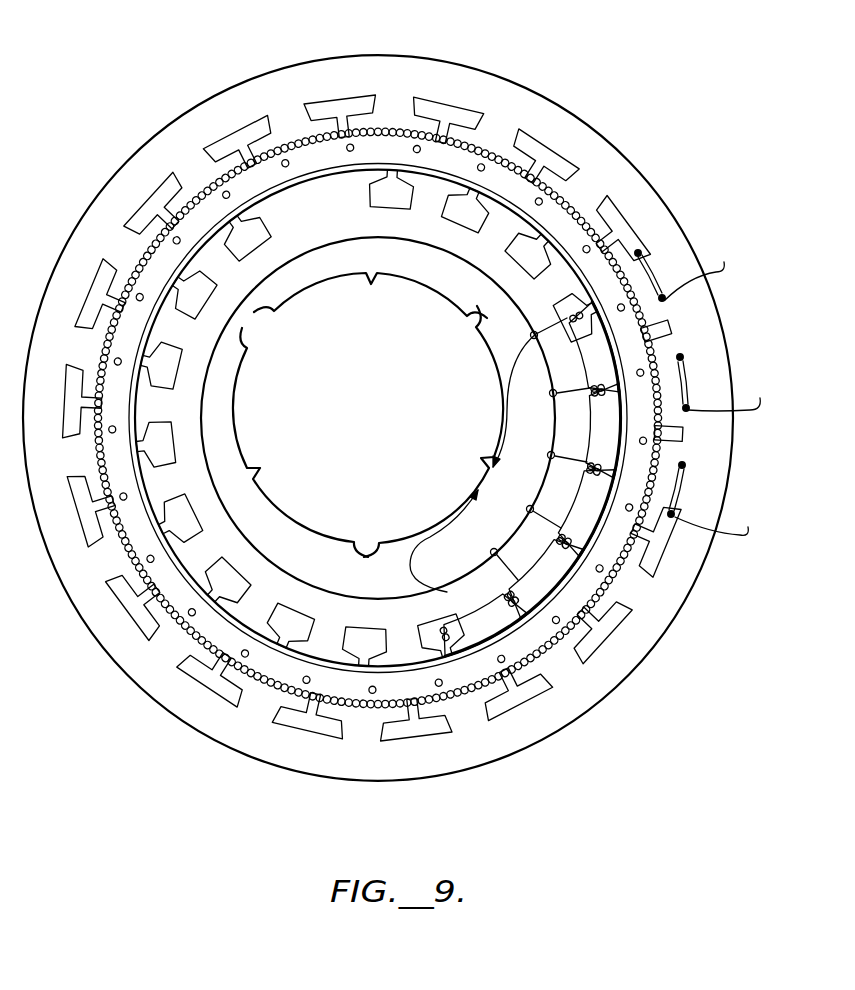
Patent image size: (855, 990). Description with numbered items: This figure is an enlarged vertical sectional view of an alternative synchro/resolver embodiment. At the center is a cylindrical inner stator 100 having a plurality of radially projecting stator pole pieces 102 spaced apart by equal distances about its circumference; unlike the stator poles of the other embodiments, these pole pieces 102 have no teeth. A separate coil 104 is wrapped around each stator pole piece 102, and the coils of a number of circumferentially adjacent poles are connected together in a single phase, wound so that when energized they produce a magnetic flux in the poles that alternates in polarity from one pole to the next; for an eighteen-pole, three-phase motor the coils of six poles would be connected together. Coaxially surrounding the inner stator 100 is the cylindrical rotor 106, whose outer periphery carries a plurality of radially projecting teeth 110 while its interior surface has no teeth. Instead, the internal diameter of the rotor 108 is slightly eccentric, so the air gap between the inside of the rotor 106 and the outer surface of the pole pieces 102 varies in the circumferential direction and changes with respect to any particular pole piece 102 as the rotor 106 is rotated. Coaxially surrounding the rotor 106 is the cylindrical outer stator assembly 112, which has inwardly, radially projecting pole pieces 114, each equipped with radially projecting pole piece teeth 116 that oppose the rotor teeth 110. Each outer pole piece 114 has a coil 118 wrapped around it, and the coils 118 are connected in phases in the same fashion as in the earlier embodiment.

The inner stator 100 is at (450, 583).
The stator pole piece 102 is at (481, 617).
The coil 104 is at (575, 328).
The rotor 106 is at (640, 350).
The internal diameter of the rotor 108 is at (393, 172).
The rotor teeth 110 is at (690, 432).
The outer stator assembly 112 is at (632, 658).
The outer stator pole piece 114 is at (640, 583).
The pole piece teeth 116 is at (600, 630).
The coil 118 is at (640, 255).